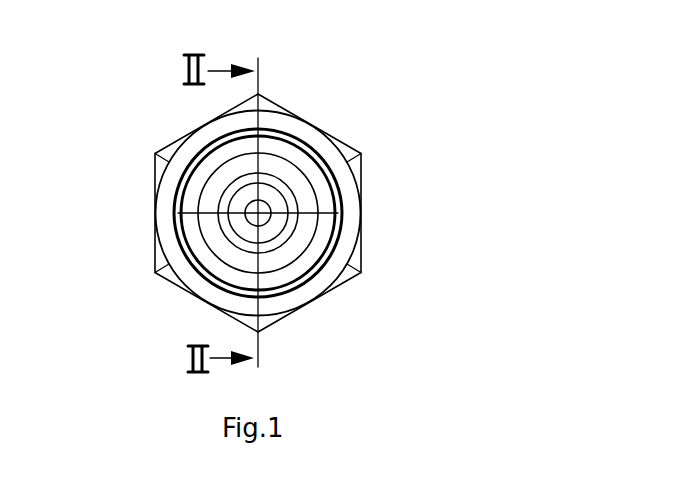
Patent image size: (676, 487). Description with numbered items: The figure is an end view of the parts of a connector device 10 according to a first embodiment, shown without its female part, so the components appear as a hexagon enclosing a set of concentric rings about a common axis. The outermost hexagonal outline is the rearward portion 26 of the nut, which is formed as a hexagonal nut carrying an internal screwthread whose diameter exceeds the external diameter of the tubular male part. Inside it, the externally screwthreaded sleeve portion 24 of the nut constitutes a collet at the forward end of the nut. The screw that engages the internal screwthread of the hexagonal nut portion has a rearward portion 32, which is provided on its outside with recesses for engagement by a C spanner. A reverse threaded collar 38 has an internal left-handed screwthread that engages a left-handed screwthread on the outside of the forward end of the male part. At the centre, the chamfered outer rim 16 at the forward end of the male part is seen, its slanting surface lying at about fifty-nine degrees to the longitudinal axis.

The connector device 10 is at (379, 126).
The rearward portion 26 is at (155, 155).
The rearward portion 32 is at (152, 211).
The externally screwthreaded sleeve portion 24 is at (188, 268).
The reverse threaded collar 38 is at (320, 275).
The chamfered outer rim 16 is at (307, 231).